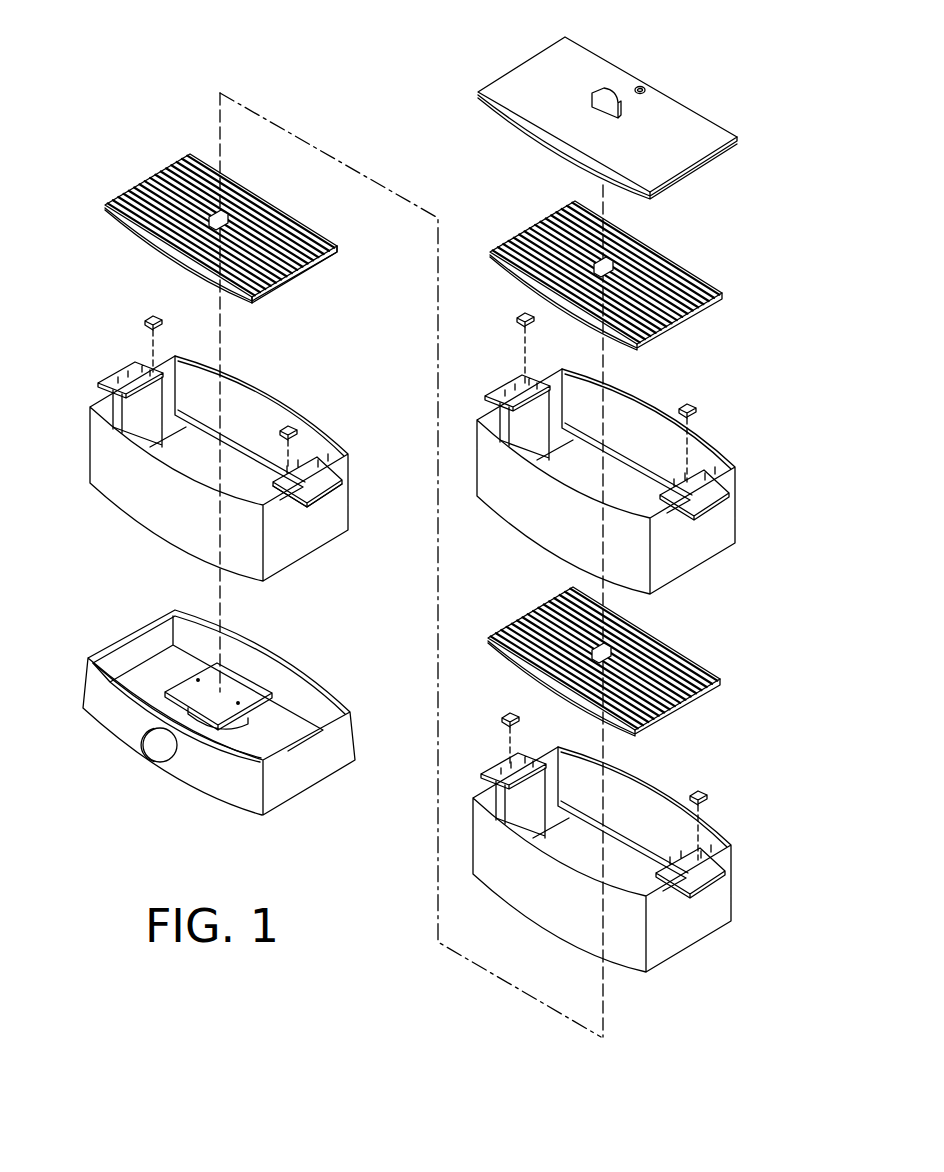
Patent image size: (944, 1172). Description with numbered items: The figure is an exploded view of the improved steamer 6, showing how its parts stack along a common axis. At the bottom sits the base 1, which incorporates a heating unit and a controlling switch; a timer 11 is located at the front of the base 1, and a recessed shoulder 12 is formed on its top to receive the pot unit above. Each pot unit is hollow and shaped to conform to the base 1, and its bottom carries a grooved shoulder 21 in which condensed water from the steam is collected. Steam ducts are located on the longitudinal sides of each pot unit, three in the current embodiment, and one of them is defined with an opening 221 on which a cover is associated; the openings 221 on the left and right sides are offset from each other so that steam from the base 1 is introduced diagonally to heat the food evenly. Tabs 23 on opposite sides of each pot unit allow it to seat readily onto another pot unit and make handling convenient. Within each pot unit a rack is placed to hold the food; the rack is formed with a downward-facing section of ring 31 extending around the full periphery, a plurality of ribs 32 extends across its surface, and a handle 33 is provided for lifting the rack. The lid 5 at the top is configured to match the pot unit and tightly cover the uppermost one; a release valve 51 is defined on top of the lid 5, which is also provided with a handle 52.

The base 1 is at (207, 696).
The timer 11 is at (149, 774).
The recessed shoulder 12 is at (219, 665).
The grooved shoulder 21 is at (241, 420).
The opening 221 is at (164, 380).
The tab 23 is at (339, 513).
The ring 31 is at (311, 274).
The rib 32 is at (221, 196).
The handle 33 is at (256, 194).
The lid 5 is at (607, 107).
The release valve 51 is at (674, 71).
The handle 52 is at (624, 67).
The steamer 6 is at (428, 148).